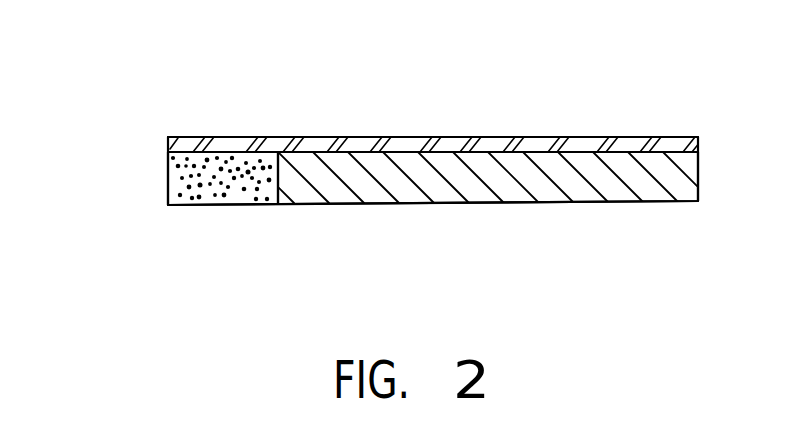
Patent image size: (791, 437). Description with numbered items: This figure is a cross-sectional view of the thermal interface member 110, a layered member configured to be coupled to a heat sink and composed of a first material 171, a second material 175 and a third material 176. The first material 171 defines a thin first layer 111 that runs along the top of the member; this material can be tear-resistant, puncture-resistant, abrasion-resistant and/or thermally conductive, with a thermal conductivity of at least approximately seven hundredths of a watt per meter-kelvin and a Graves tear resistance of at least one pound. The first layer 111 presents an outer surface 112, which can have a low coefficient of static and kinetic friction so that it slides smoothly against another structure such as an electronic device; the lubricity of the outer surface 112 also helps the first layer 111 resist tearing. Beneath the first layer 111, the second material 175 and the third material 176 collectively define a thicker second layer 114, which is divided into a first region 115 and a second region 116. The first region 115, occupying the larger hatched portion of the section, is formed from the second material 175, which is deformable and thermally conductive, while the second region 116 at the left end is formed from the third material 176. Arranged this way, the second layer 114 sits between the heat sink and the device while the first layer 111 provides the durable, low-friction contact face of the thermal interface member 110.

The thermal interface member 110 is at (98, 87).
The first layer 111 is at (168, 142).
The outer surface 112 is at (365, 137).
The first material 171 is at (535, 146).
The second layer 114 is at (168, 178).
The second region 116 is at (223, 185).
The third material 176 is at (255, 183).
The first region 115 is at (500, 197).
The second material 175 is at (607, 178).